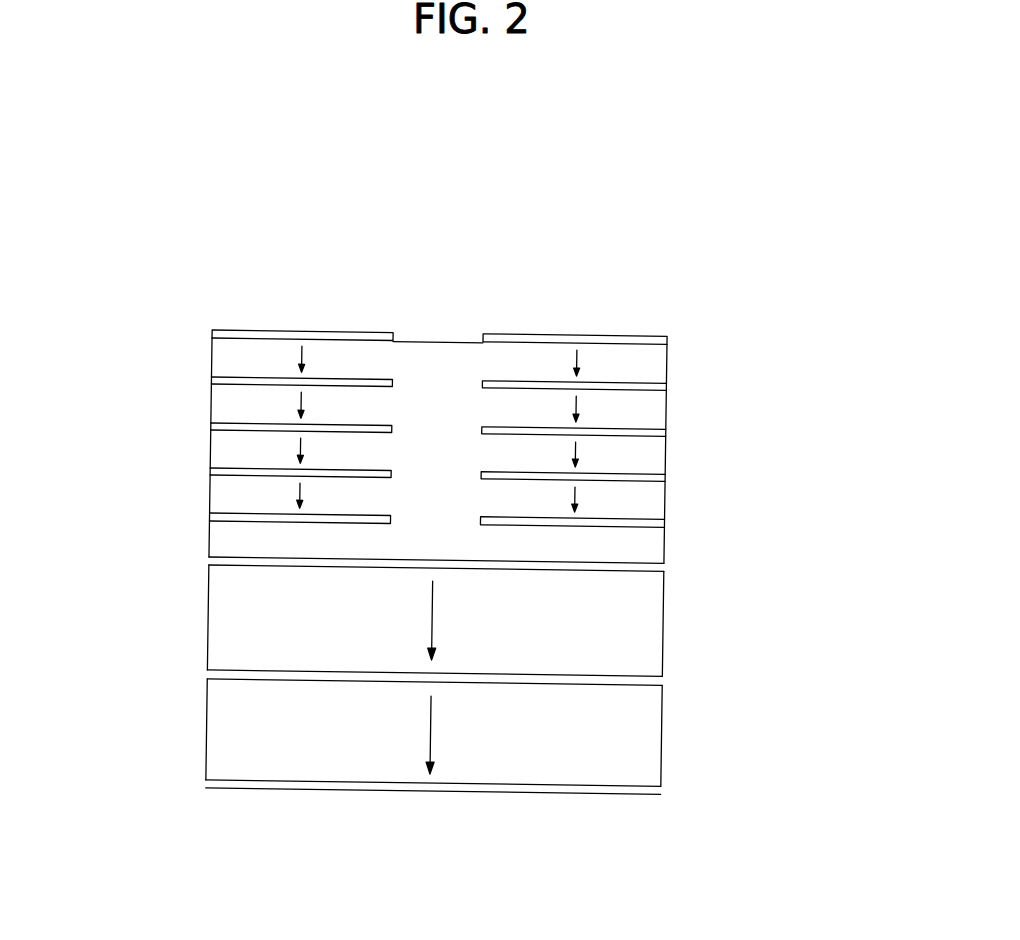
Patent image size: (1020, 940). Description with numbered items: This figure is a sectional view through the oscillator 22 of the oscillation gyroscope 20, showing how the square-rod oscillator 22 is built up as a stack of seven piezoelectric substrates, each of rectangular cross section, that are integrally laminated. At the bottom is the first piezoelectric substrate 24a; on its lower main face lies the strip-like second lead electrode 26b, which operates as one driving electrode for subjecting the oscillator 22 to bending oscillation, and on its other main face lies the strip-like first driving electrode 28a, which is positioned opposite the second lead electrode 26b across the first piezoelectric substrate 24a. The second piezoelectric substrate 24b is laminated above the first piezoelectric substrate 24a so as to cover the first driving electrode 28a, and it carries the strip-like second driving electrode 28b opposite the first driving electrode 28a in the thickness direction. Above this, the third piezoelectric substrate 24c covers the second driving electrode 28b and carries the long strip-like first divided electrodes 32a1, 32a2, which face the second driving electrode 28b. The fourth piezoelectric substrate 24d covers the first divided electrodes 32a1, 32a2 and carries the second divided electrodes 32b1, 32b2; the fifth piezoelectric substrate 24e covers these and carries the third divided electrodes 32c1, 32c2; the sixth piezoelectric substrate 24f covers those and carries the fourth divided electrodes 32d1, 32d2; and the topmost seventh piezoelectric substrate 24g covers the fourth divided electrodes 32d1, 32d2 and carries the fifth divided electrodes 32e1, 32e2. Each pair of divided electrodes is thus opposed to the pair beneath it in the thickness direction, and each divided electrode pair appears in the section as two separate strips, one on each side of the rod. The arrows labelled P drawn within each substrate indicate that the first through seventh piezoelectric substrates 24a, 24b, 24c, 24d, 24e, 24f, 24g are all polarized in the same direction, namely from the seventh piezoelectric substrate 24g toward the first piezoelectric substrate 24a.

The oscillation gyroscope 20 is at (289, 182).
The oscillator 22 is at (643, 319).
The first piezoelectric substrate 24a is at (655, 736).
The second piezoelectric substrate 24b is at (655, 622).
The third piezoelectric substrate 24c is at (657, 546).
The fourth piezoelectric substrate 24d is at (657, 503).
The fifth piezoelectric substrate 24e is at (657, 458).
The sixth piezoelectric substrate 24f is at (657, 412).
The seventh piezoelectric substrate 24g is at (657, 364).
The second lead electrode 26b is at (636, 797).
The first driving electrode 28a is at (662, 676).
The second driving electrode 28b is at (664, 566).
The first divided electrode 32a1 is at (212, 516).
The first divided electrode 32a2 is at (664, 522).
The second divided electrode 32b1 is at (212, 470).
The second divided electrode 32b2 is at (664, 477).
The third divided electrode 32c1 is at (212, 425).
The third divided electrode 32c2 is at (664, 432).
The fourth divided electrode 32d1 is at (212, 379).
The fourth divided electrode 32d2 is at (664, 386).
The fifth divided electrode 32e1 is at (212, 332).
The fifth divided electrode 32e2 is at (536, 333).